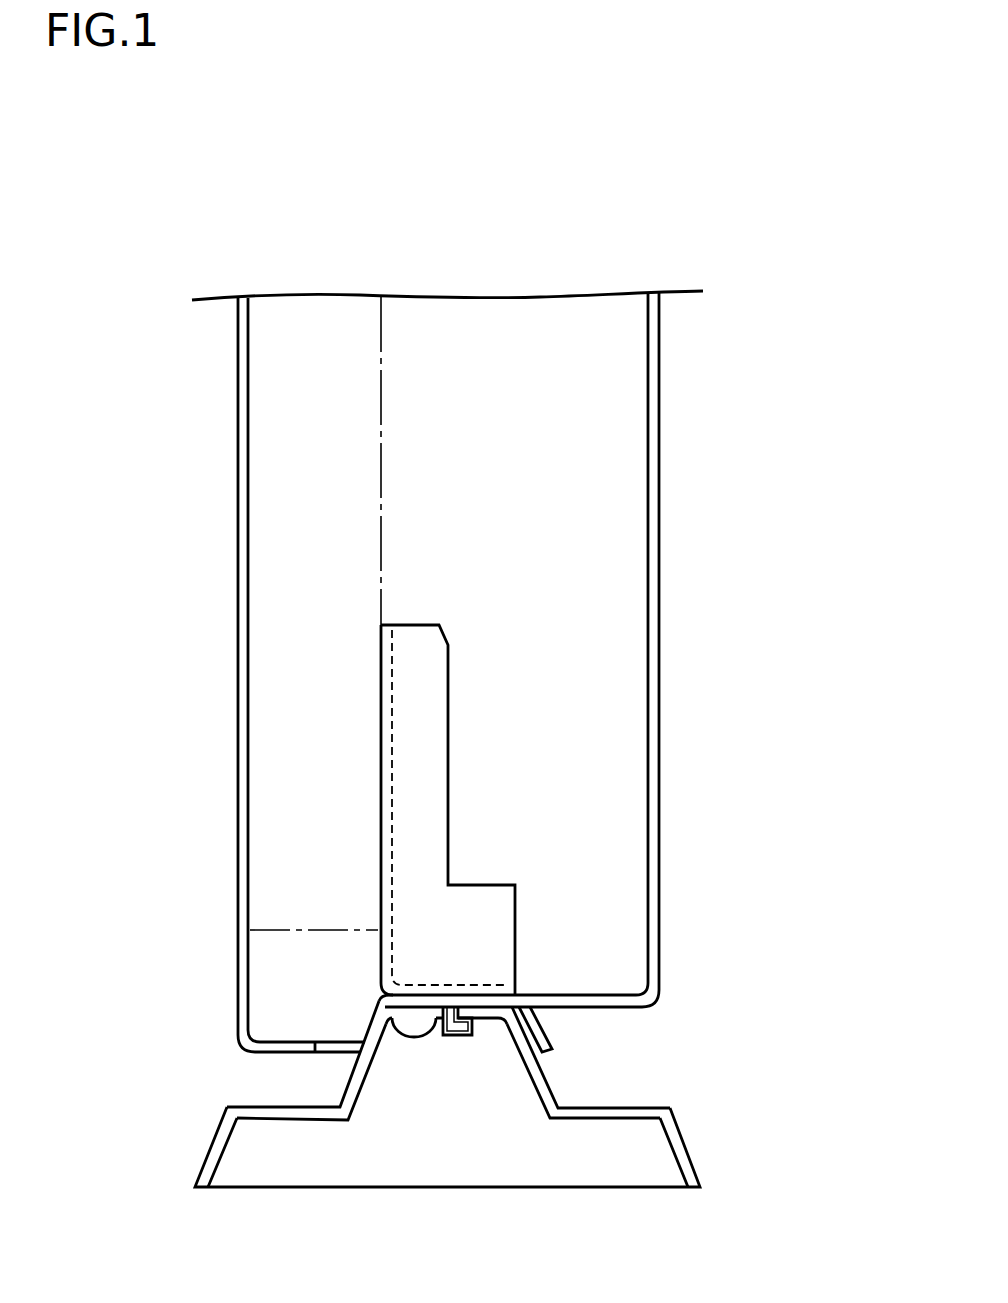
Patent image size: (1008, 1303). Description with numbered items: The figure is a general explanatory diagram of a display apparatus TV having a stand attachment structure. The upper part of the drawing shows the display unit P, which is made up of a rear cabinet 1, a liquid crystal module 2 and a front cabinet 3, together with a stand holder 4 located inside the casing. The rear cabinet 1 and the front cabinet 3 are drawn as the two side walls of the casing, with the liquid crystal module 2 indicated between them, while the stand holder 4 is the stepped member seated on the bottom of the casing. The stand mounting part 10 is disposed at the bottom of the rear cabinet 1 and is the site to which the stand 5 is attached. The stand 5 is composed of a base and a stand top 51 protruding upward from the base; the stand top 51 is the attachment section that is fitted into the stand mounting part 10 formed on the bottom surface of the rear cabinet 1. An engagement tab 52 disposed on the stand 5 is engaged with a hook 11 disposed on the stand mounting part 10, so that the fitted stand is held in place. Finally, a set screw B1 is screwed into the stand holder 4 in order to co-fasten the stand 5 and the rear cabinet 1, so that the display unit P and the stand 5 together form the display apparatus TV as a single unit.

The rear cabinet 1 is at (660, 450).
The liquid crystal module 2 is at (238, 523).
The front cabinet 3 is at (272, 452).
The stand holder 4 is at (425, 730).
The stand 5 is at (675, 1122).
The stand mounting part 10 is at (476, 1021).
The hook 11 is at (471, 1085).
The stand top 51 is at (548, 1080).
The engagement tab 52 is at (480, 1013).
The set screw B1 is at (410, 1038).
The display unit P is at (547, 357).
The display apparatus TV is at (805, 268).